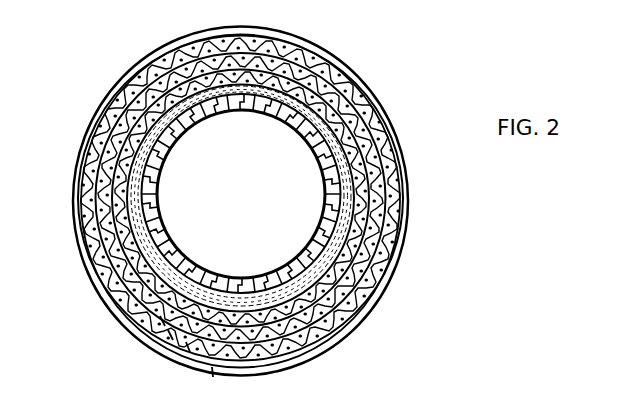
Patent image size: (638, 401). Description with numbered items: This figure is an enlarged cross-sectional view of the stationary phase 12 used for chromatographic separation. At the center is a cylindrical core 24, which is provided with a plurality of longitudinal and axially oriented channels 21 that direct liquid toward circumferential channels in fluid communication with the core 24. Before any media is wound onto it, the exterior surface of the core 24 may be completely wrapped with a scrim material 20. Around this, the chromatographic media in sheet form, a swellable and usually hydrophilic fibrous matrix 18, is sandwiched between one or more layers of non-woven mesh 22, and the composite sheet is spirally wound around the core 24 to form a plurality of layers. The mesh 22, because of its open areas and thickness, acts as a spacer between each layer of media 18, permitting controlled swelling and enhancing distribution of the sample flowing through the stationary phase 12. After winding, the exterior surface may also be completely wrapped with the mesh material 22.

The stationary phase 12 is at (118, 329).
The swellable fibrous matrix 18 is at (117, 236).
The scrim material 20 is at (216, 112).
The longitudinal and axially oriented channels 21 is at (308, 112).
The non-woven mesh 22 is at (213, 370).
The cylindrical core 24 is at (340, 167).